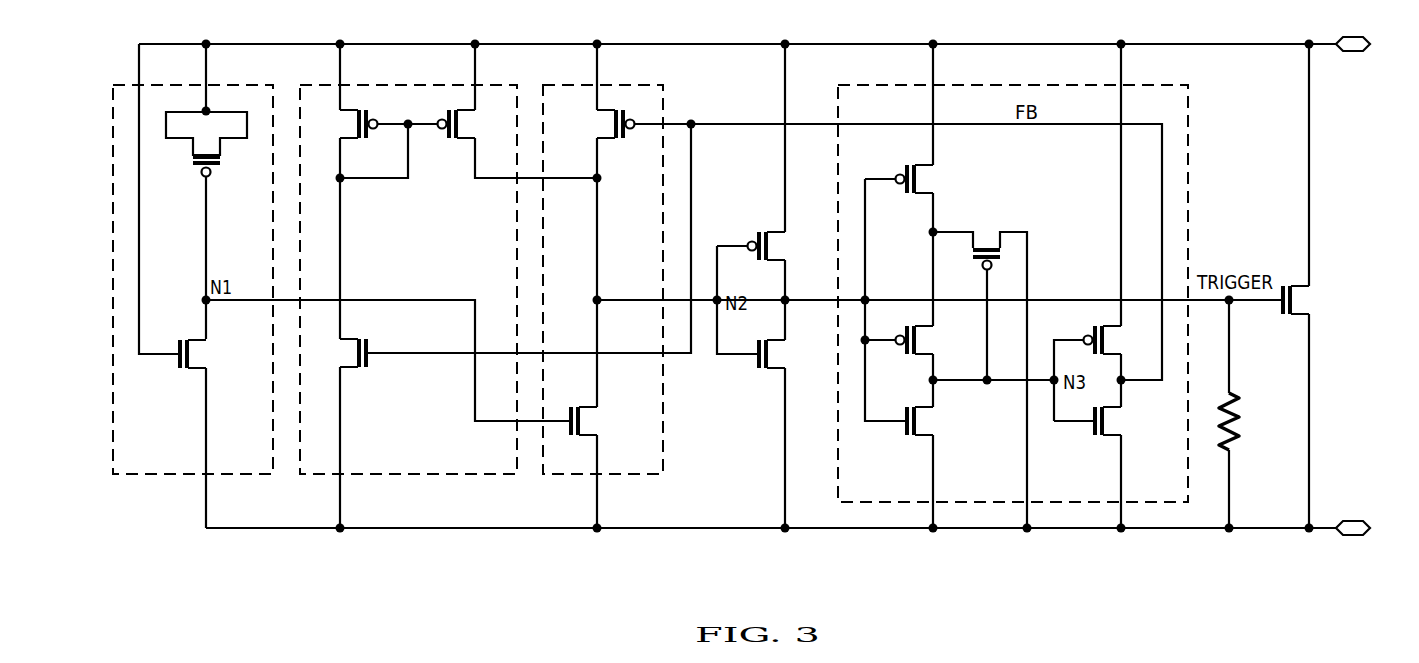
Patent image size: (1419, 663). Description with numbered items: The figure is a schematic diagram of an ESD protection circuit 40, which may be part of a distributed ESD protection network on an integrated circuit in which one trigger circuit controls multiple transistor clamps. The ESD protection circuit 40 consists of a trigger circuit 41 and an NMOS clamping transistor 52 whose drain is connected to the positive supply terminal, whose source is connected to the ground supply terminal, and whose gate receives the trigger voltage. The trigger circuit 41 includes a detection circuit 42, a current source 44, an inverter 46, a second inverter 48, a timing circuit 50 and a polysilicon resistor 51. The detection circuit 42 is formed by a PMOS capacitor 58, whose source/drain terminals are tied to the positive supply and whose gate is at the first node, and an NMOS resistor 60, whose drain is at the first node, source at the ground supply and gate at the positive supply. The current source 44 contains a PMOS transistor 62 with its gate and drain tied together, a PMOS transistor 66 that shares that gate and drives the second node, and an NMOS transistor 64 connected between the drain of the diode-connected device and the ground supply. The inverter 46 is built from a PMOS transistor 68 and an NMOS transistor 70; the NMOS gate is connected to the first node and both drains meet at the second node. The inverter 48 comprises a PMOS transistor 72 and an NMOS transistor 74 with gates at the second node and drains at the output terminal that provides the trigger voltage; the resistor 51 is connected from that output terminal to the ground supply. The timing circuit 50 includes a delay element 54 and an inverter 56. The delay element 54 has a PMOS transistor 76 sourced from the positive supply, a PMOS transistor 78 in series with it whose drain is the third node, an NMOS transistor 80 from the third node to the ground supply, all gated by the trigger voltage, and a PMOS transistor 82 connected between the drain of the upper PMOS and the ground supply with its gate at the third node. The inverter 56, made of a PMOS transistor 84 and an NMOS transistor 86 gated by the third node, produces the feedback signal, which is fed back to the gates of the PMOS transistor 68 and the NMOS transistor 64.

The ESD protection circuit 40 is at (610, 623).
The trigger circuit 41 is at (287, 567).
The detection circuit 42 is at (152, 475).
The current source 44 is at (430, 475).
The inverter 46 is at (563, 475).
The inverter 48 is at (765, 333).
The timing circuit 50 is at (1188, 132).
The polysilicon resistor 51 is at (1240, 409).
The NMOS clamping transistor 52 is at (1299, 301).
The delay element 54 is at (945, 407).
The inverter 56 is at (1103, 407).
The PMOS capacitor 58 is at (211, 177).
The NMOS resistor 60 is at (194, 354).
The PMOS transistor 62 is at (350, 125).
The NMOS transistor 64 is at (350, 354).
The PMOS transistor 66 is at (466, 125).
The PMOS transistor 68 is at (606, 125).
The NMOS transistor 70 is at (587, 421).
The PMOS transistor 72 is at (776, 247).
The NMOS transistor 74 is at (776, 355).
The PMOS transistor 76 is at (923, 180).
The PMOS transistor 78 is at (923, 341).
The NMOS transistor 80 is at (923, 422).
The PMOS transistor 82 is at (985, 247).
The PMOS transistor 84 is at (1111, 341).
The NMOS transistor 86 is at (1111, 422).